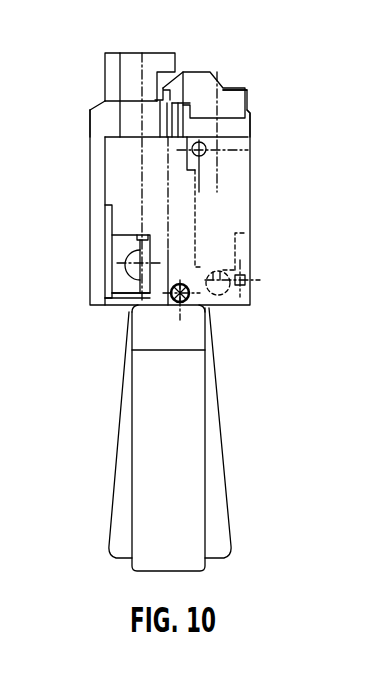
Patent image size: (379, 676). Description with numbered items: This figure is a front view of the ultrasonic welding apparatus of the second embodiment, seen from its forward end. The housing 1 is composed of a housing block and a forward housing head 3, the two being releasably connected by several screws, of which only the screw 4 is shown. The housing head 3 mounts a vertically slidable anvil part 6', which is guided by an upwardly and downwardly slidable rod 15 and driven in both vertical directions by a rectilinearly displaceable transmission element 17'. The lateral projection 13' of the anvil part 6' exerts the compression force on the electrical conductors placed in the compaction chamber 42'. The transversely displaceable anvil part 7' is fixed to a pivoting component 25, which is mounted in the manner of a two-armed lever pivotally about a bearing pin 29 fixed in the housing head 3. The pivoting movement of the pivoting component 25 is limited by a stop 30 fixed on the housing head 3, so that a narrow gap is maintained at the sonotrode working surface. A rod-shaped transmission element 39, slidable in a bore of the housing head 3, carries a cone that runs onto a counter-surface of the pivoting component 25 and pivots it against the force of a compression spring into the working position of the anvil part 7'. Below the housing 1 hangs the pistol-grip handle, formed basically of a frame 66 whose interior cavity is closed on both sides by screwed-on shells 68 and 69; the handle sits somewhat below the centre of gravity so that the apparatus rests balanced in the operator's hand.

The housing 1 is at (222, 72).
The housing head 3 is at (242, 205).
The screw 4 is at (181, 314).
The anvil part 6' is at (103, 92).
The anvil part 7' is at (264, 70).
The lateral projection 13' is at (157, 77).
The rod 15 is at (125, 118).
The transmission element 17' is at (104, 251).
The pivoting component 25 is at (242, 128).
The bearing pin 29 is at (203, 155).
The stop 30 is at (244, 280).
The transmission element 39 is at (220, 295).
The compaction chamber 42' is at (196, 59).
The frame 66 is at (178, 461).
The shell 68 is at (122, 445).
The shell 69 is at (222, 447).